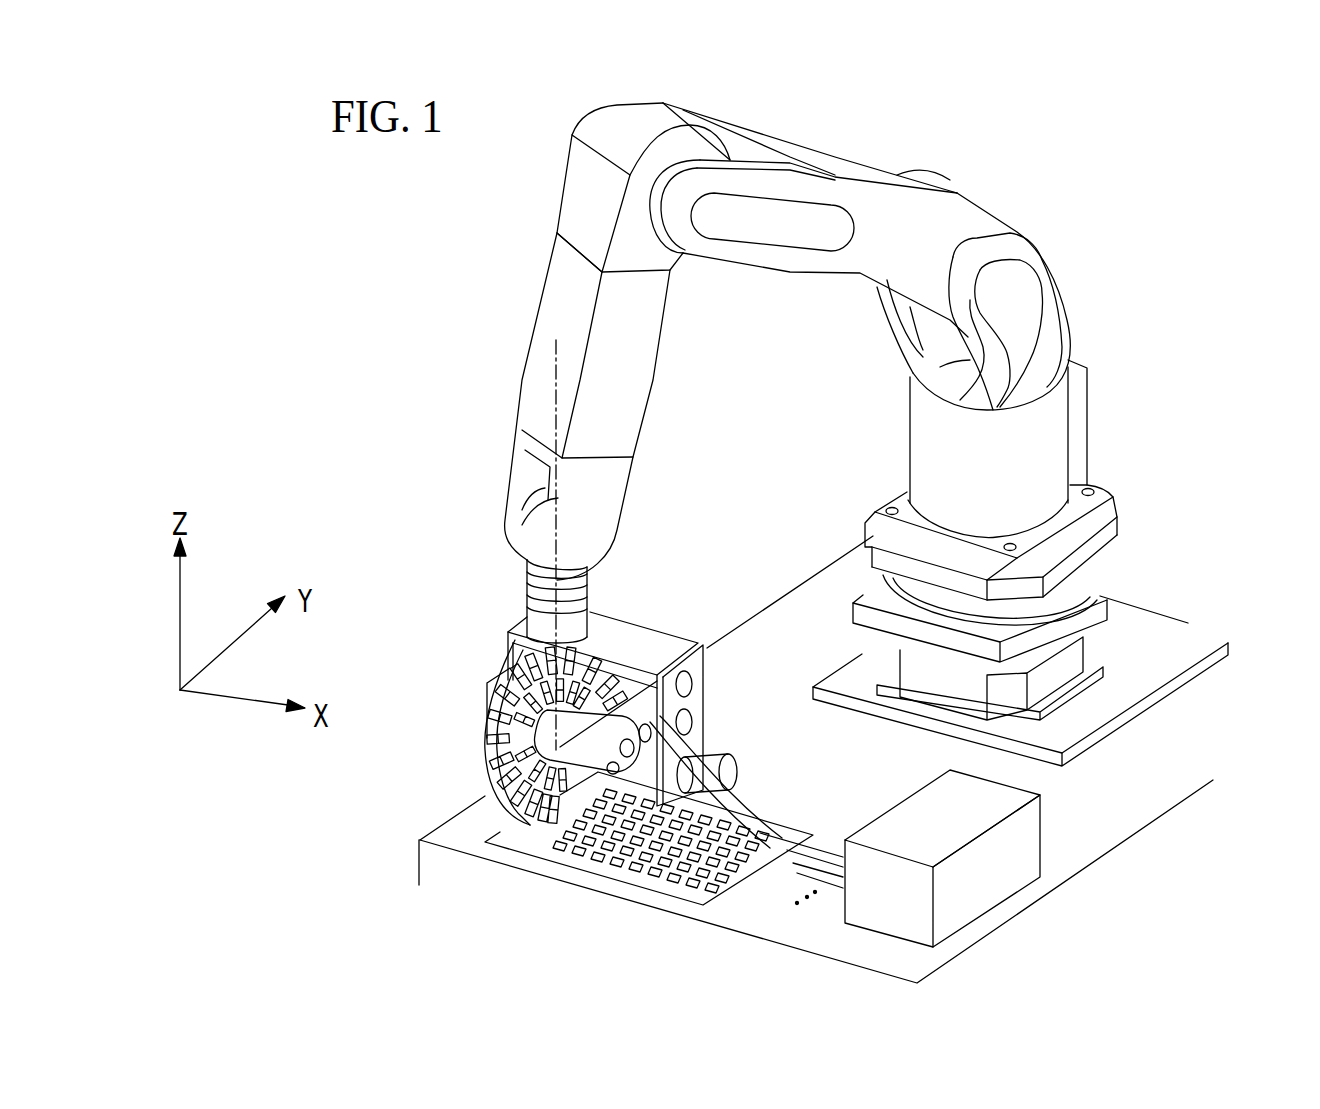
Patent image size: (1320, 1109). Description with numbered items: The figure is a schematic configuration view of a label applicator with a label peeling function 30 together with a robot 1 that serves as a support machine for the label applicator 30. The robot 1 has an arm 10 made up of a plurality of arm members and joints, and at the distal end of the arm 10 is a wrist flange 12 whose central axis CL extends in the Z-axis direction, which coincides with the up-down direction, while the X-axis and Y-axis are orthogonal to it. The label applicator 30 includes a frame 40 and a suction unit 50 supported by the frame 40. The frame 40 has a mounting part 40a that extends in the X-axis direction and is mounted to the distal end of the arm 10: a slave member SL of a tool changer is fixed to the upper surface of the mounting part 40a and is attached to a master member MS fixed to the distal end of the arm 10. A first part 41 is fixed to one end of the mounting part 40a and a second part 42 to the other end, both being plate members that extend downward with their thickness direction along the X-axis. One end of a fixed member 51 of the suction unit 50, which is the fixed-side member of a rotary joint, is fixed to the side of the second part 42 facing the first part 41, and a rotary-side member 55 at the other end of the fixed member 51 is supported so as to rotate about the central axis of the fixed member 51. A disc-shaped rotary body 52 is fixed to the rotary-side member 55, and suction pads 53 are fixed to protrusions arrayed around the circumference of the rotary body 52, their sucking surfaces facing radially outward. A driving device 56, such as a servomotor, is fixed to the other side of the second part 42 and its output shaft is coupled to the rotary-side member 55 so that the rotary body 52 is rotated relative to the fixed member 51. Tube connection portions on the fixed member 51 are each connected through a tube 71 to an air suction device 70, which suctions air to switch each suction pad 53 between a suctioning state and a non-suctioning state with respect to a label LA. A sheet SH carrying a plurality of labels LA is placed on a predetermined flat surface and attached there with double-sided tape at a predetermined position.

The robot 1 is at (1107, 343).
The arm 10 is at (832, 414).
The wrist flange 12 is at (527, 563).
The label applicator 30 is at (593, 712).
The frame 40 is at (615, 675).
The mounting part 40a is at (638, 640).
The first part 41 is at (508, 654).
The second part 42 is at (703, 720).
The suction unit 50 is at (593, 781).
The fixed member 51 is at (622, 722).
The rotary body 52 is at (485, 707).
The suction pad 53 is at (510, 817).
The rotary-side member 55 is at (505, 735).
The driving device 56 is at (735, 775).
The air suction device 70 is at (977, 890).
The tube 71 is at (830, 850).
The central axis CL is at (556, 360).
The master member MS is at (531, 605).
The slave member SL is at (537, 627).
The sheet SH is at (649, 877).
The label LA is at (553, 820).